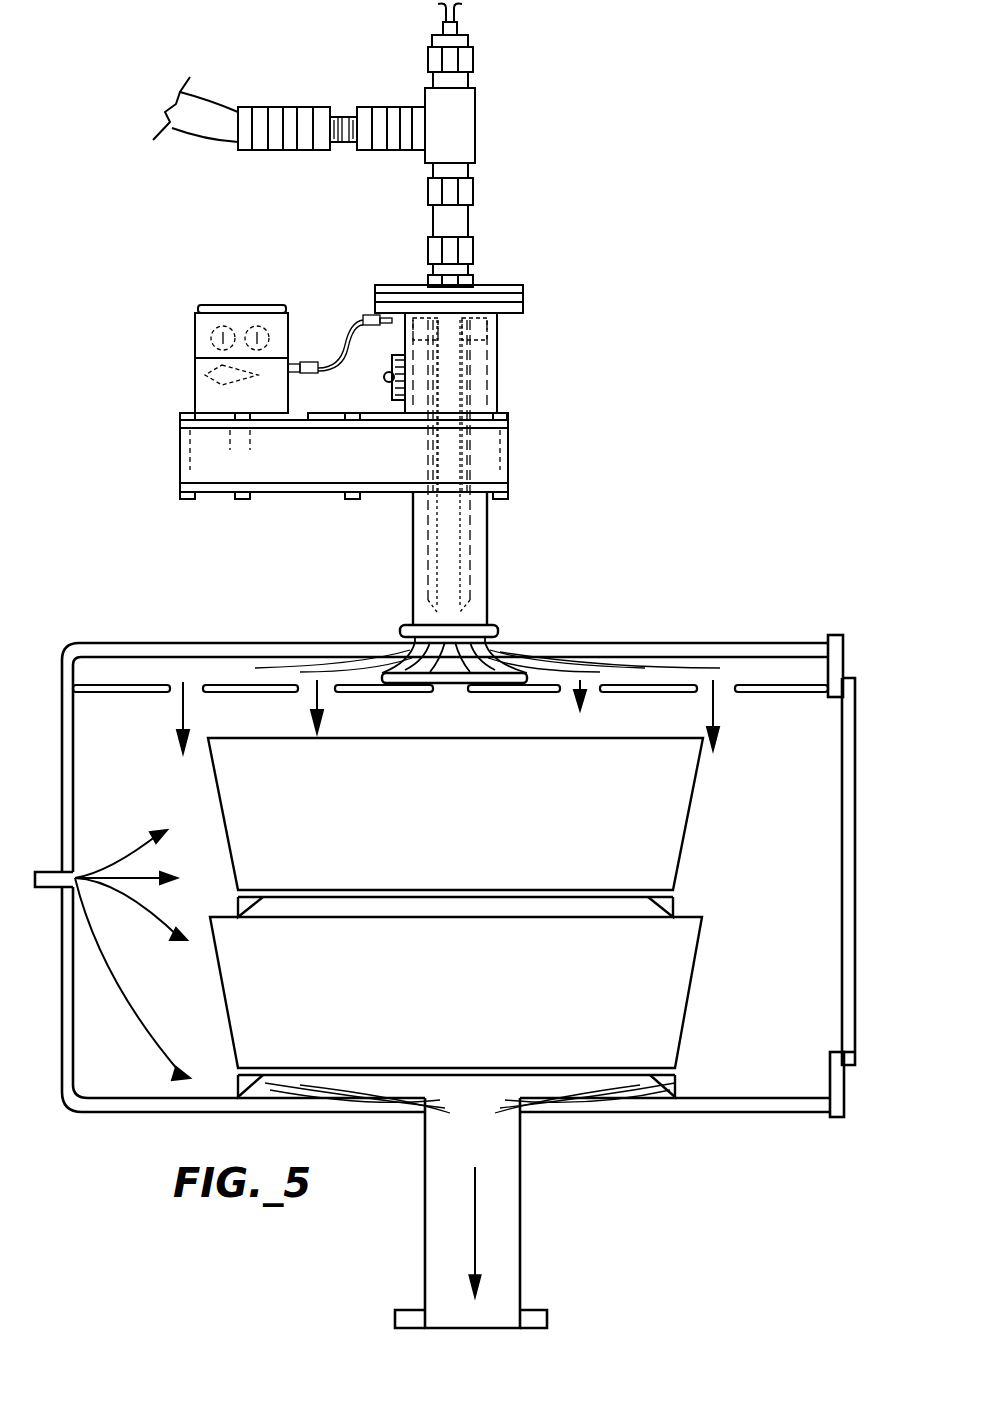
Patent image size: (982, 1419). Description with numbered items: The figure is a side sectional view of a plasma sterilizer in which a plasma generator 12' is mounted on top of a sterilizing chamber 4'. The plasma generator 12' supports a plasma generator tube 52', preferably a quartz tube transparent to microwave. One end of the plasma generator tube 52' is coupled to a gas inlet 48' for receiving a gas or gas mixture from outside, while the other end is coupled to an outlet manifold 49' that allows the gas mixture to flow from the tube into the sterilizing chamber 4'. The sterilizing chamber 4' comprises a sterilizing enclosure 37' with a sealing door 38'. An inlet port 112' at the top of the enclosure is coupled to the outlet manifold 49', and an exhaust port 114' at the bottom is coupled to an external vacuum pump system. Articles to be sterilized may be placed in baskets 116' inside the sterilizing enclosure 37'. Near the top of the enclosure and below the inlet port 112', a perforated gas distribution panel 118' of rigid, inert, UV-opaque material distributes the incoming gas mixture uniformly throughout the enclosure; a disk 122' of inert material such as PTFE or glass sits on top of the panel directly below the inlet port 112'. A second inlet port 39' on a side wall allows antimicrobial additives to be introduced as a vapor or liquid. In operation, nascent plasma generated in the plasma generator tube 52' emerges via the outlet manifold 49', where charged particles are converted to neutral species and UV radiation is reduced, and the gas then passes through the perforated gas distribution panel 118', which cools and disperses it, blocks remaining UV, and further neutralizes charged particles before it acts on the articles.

The sterilizing chamber 4' is at (453, 666).
The plasma generator 12' is at (402, 392).
The sterilizing enclosure 37' is at (773, 671).
The sealing door 38' is at (833, 1074).
The second inlet port 39' is at (112, 992).
The gas inlet 48' is at (408, 262).
The outlet manifold 49' is at (490, 632).
The plasma generator tube 52' is at (477, 472).
The inlet port 112' is at (487, 644).
The exhaust port 114' is at (470, 1205).
The baskets 116' is at (509, 917).
The perforated gas distribution panel 118' is at (382, 635).
The disk 122' is at (454, 699).